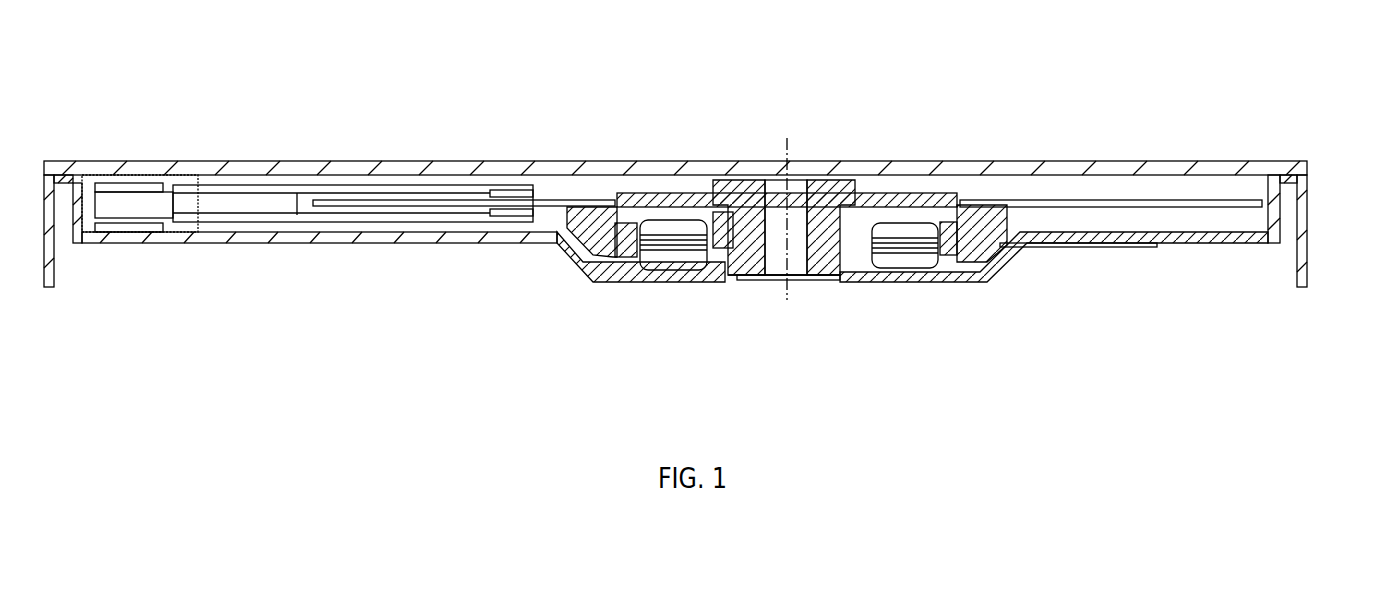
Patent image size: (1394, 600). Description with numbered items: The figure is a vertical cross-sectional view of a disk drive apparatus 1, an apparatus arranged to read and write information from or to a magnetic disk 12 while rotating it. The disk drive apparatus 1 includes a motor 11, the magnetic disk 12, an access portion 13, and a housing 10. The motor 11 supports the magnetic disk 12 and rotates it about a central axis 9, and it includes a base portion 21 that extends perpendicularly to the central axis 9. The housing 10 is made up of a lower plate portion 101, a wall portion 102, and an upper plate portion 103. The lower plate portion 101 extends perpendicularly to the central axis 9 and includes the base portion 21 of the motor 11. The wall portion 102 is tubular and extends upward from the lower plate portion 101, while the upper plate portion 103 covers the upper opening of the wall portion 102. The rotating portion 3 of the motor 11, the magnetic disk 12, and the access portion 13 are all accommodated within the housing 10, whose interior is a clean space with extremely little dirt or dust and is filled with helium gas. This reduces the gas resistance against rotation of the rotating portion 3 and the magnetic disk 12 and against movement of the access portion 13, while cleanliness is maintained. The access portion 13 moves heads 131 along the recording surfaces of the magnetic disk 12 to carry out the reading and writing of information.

The disk drive apparatus 1 is at (189, 128).
The housing 10 is at (1260, 140).
The lower plate portion 101 is at (1183, 237).
The wall portion 102 is at (1277, 207).
The upper plate portion 103 is at (1003, 167).
The motor 11 is at (690, 193).
The magnetic disk 12 is at (1140, 202).
The access portion 13 is at (336, 183).
The heads 131 is at (507, 197).
The rotating portion 3 is at (878, 197).
The central axis 9 is at (785, 145).
The base portion 21 is at (862, 268).